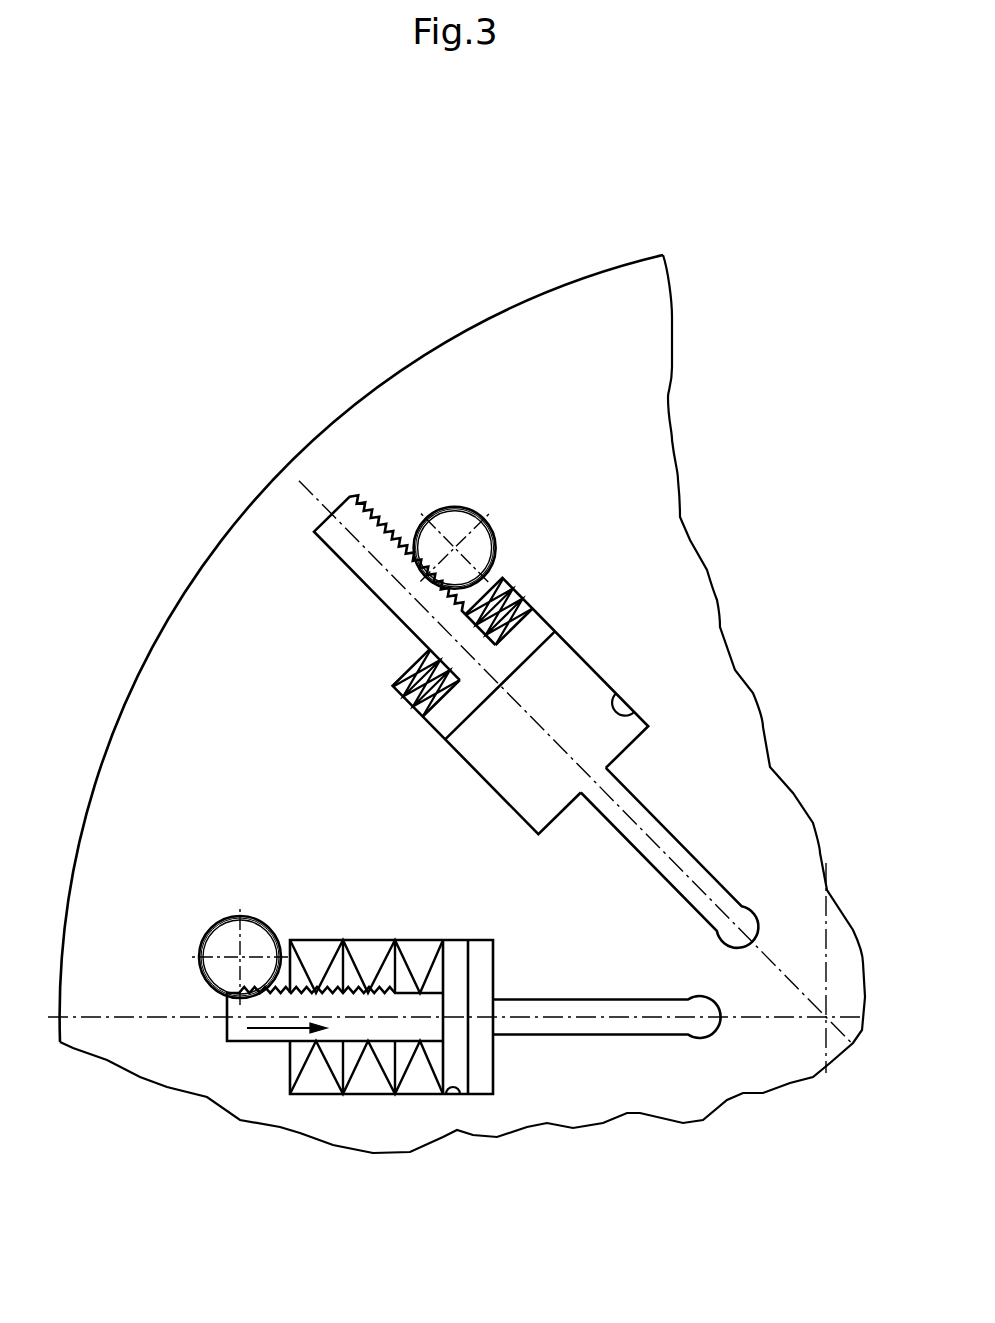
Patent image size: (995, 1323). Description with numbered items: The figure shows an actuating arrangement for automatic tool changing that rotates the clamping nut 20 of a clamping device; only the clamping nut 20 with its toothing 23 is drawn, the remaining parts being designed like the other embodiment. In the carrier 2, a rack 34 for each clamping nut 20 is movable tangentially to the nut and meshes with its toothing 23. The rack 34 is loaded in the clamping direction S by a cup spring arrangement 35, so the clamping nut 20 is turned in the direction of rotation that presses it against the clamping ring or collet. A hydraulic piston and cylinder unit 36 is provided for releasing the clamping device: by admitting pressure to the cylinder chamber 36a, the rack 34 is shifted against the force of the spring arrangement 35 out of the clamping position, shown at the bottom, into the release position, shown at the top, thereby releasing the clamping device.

The carrier 2 is at (173, 745).
The clamping nut 20 is at (455, 548).
The toothing 23 is at (466, 514).
The rack 34 is at (372, 573).
The cup spring arrangement 35 is at (325, 1093).
The piston and cylinder unit 36 is at (597, 660).
The cylinder chamber 36a is at (640, 720).
The clamping direction S is at (262, 1030).